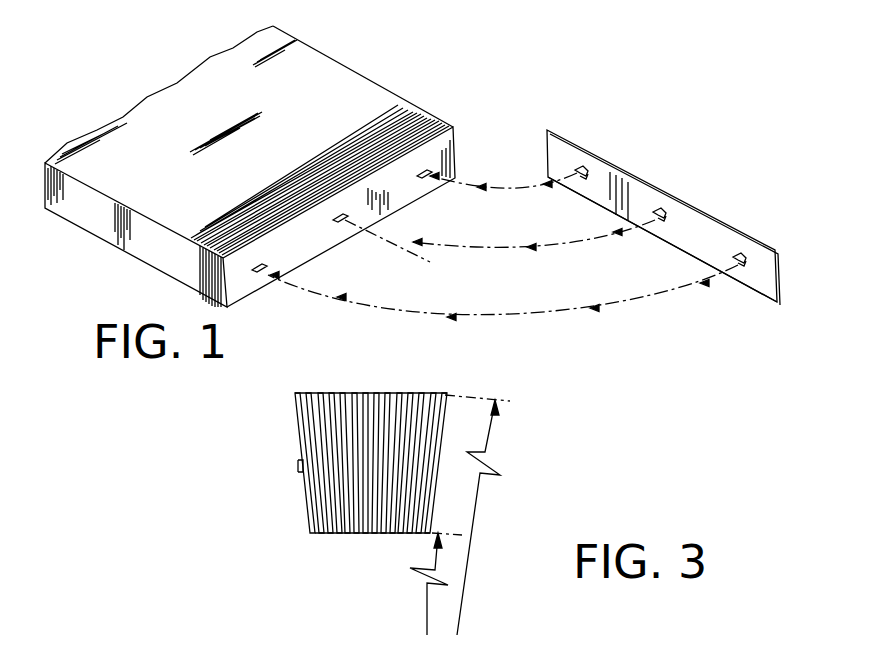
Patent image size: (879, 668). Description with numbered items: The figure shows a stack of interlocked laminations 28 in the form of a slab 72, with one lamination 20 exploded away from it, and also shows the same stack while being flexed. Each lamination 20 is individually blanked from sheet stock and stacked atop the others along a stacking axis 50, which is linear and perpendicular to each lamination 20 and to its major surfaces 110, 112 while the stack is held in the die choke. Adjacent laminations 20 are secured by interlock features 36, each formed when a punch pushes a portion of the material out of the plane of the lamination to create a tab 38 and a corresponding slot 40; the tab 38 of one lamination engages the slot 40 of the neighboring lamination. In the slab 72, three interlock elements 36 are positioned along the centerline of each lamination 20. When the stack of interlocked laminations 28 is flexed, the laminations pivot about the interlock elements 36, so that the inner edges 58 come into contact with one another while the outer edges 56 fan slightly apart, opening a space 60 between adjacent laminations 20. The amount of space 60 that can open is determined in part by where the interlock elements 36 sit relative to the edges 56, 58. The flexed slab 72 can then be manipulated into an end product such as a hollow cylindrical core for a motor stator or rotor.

In FIG. 1, the lamination 20 is at (450, 142).
In FIG. 3, the lamination 20 is at (313, 525).
In FIG. 1, the stack of interlocked laminations 28 is at (372, 63).
In FIG. 1, the interlock feature 36 is at (582, 163).
In FIG. 3, the interlock feature 36 is at (292, 458).
In FIG. 1, the tab 38 is at (578, 180).
In FIG. 3, the tab 38 is at (298, 468).
In FIG. 1, the slot 40 is at (338, 207).
In FIG. 1, the stacking axis 50 is at (143, 100).
In FIG. 1, the outer edge 56 is at (398, 103).
In FIG. 3, the outer edge 56 is at (347, 393).
In FIG. 1, the inner edge 58 is at (228, 307).
In FIG. 3, the inner edge 58 is at (353, 533).
In FIG. 3, the space 60 is at (306, 392).
In FIG. 1, the slab 72 is at (307, 48).
In FIG. 1, the major surface 110 is at (715, 248).
In FIG. 1, the major surface 112 is at (312, 249).